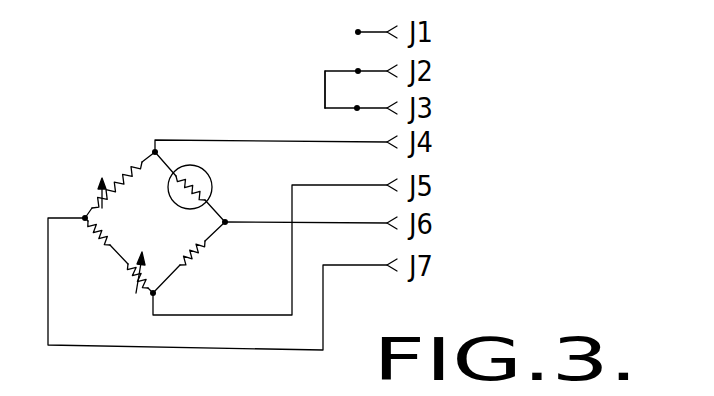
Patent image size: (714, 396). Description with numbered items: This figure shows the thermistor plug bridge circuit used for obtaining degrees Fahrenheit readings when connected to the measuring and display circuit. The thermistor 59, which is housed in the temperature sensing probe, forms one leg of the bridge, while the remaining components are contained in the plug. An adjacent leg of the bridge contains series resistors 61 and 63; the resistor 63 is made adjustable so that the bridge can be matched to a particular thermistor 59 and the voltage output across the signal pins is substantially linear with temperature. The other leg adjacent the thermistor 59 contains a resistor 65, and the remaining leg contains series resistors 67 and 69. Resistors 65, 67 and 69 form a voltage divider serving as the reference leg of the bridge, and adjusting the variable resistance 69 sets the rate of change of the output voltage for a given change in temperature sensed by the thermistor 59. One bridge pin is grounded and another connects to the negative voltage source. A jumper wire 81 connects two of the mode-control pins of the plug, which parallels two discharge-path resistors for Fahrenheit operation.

The thermistor 59 is at (212, 182).
The resistor 61 is at (136, 166).
The adjustable resistor 63 is at (96, 198).
The resistor 65 is at (201, 262).
The resistor 67 is at (101, 240).
The variable resistance 69 is at (133, 283).
The jumper wire 81 is at (325, 92).